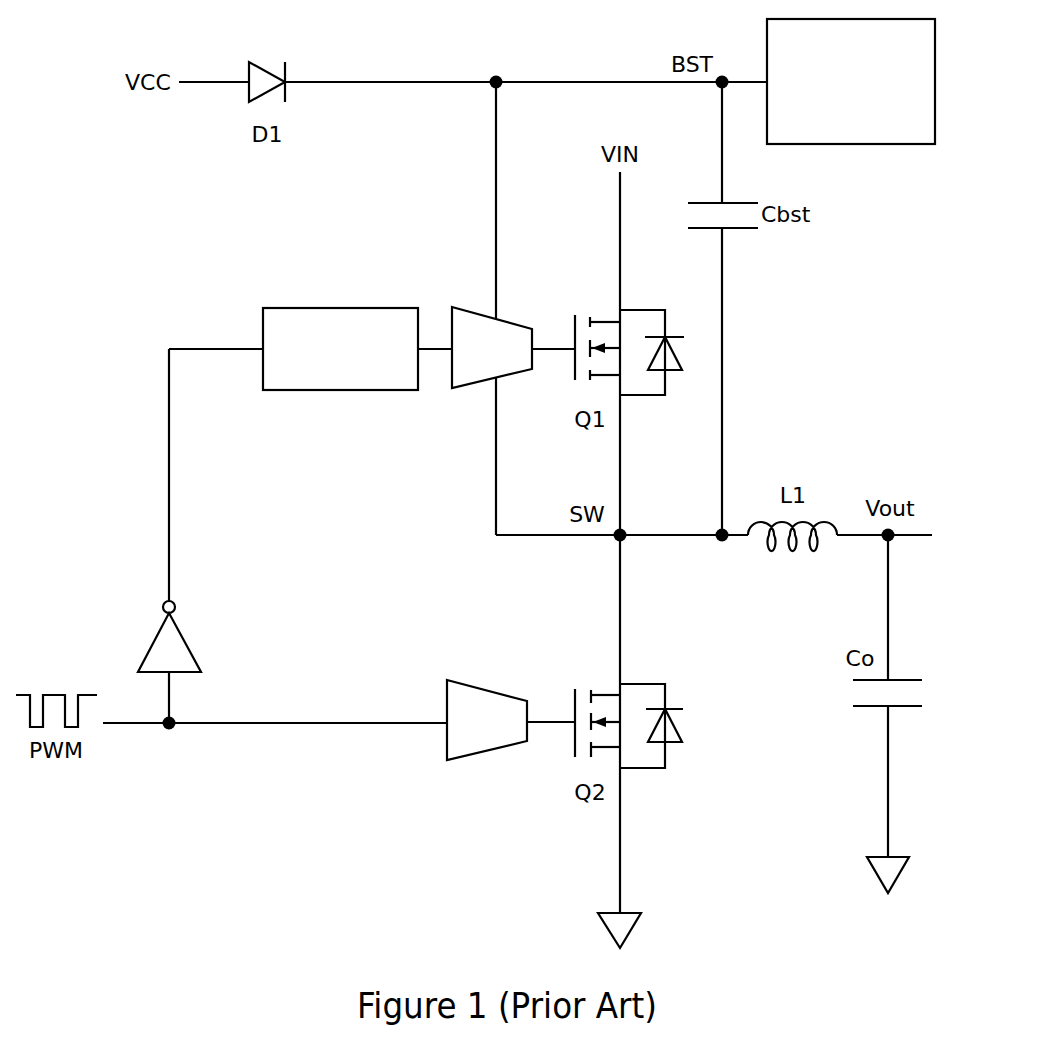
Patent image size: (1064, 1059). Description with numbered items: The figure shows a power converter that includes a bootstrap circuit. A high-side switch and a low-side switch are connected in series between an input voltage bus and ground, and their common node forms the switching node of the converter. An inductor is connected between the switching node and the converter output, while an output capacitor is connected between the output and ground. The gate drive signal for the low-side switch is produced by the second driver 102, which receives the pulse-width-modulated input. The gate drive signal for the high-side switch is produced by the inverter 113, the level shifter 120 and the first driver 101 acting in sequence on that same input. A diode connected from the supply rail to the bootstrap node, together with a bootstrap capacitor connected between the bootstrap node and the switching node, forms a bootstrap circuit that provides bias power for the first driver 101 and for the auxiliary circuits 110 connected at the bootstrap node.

The auxiliary circuits 110 is at (851, 81).
The level shifter 120 is at (340, 349).
The first driver 101 is at (492, 347).
The second driver 102 is at (487, 720).
The inverter 113 is at (169, 636).